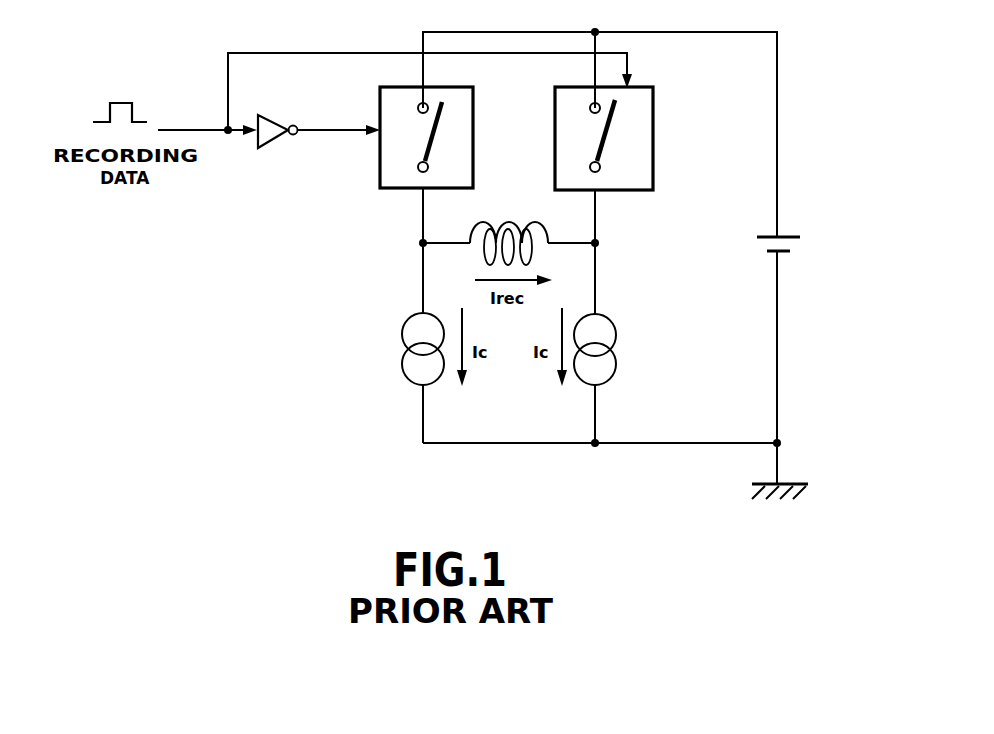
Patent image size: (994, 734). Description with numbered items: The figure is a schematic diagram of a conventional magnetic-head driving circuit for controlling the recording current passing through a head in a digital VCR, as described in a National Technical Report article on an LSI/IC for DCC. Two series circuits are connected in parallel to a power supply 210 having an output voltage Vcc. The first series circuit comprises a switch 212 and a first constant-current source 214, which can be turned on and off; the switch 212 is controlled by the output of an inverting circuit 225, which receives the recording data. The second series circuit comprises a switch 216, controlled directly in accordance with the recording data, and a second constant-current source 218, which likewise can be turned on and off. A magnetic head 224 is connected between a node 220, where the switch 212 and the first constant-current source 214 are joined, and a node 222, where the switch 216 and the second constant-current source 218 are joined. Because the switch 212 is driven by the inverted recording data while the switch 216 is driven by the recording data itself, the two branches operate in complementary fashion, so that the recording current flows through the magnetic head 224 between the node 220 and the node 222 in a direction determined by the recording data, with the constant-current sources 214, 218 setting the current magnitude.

The power supply 210 is at (793, 247).
The switch 212 is at (380, 156).
The first constant-current source 214 is at (410, 334).
The switch 216 is at (653, 118).
The second constant-current source 218 is at (603, 365).
The node 220 is at (423, 243).
The node 222 is at (600, 245).
The magnetic head 224 is at (508, 219).
The inverting circuit 225 is at (275, 118).